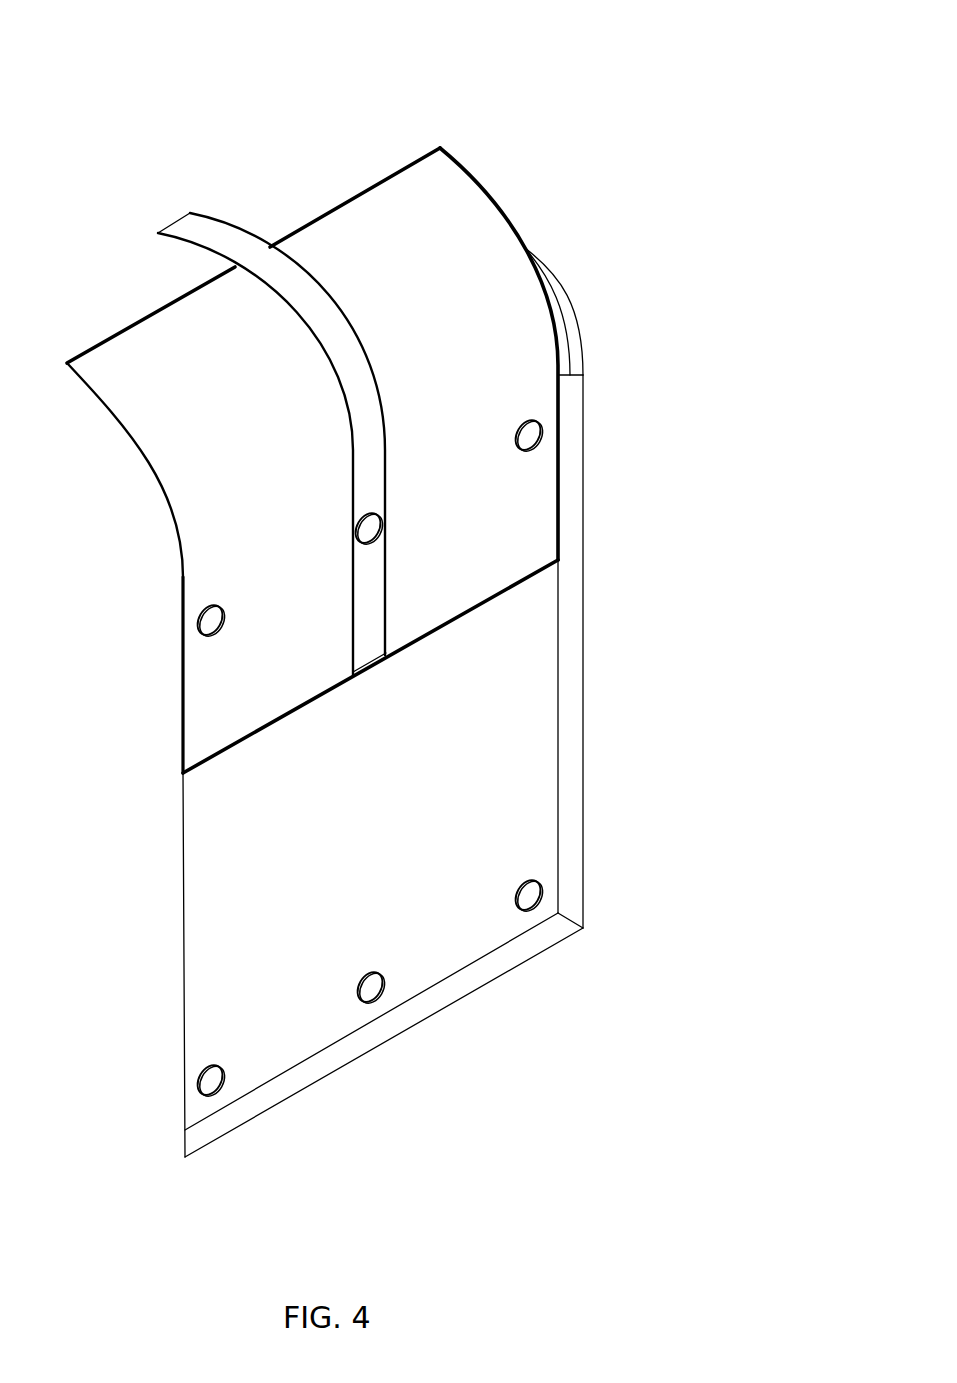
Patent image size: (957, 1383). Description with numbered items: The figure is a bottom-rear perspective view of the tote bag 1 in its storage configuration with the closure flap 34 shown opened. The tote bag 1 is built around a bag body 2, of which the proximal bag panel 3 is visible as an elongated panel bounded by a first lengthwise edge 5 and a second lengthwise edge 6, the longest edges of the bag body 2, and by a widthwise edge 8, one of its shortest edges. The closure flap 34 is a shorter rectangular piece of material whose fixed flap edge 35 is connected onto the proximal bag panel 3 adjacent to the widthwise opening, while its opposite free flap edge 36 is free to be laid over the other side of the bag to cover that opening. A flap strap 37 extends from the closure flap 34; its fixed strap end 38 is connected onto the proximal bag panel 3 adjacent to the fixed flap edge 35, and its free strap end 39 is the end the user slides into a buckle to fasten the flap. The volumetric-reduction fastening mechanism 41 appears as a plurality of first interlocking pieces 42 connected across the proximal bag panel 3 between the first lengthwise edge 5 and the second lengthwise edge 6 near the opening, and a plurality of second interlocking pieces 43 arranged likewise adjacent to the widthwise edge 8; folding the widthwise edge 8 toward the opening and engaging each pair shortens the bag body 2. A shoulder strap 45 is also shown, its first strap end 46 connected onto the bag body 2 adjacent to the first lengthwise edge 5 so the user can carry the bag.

The tote bag 1 is at (354, 580).
The bag body 2 is at (722, 855).
The proximal bag panel 3 is at (368, 938).
The first lengthwise edge 5 is at (576, 719).
The second lengthwise edge 6 is at (186, 882).
The widthwise edge 8 is at (408, 1018).
The closure flap 34 is at (174, 477).
The fixed flap edge 35 is at (488, 603).
The free flap edge 36 is at (385, 187).
The flap strap 37 is at (283, 418).
The fixed strap end 38 is at (375, 651).
The free strap end 39 is at (177, 226).
The volumetric-reduction fastening mechanism 41 is at (369, 733).
The plurality of first interlocking pieces 42 is at (524, 432).
The plurality of second interlocking pieces 43 is at (427, 953).
The shoulder strap 45 is at (552, 284).
The first strap end 46 is at (589, 376).